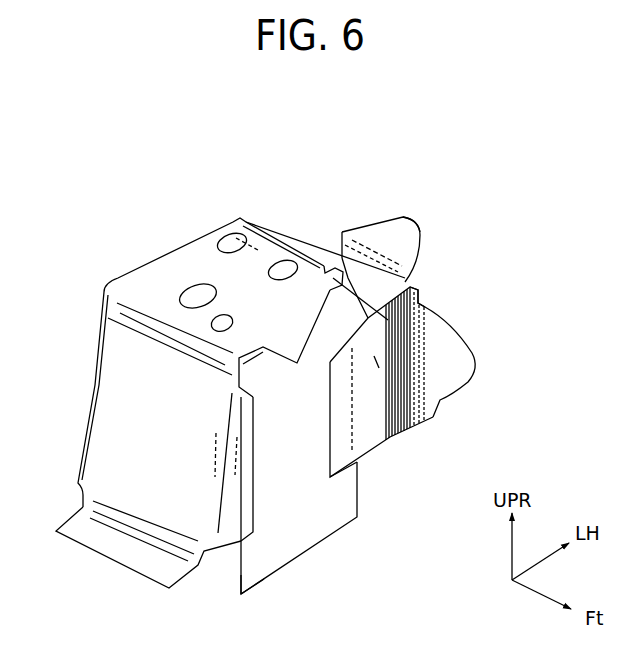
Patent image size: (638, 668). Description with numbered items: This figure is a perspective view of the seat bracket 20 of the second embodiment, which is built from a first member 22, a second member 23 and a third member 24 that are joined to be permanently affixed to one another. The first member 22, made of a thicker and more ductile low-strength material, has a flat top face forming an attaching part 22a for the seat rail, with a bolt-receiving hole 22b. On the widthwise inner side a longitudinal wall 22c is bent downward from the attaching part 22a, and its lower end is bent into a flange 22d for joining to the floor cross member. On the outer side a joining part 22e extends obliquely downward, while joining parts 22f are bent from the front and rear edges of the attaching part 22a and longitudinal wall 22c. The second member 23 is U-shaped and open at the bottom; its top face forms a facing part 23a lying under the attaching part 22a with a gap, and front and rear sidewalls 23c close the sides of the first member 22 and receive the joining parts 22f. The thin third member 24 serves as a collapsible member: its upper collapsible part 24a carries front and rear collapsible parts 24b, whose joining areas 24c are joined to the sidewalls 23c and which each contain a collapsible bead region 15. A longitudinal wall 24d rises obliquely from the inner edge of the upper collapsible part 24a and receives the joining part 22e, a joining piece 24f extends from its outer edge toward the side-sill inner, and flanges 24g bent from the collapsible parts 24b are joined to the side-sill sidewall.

The seat bracket 20 is at (281, 190).
The first member 22 is at (146, 242).
The attaching part 22a is at (132, 285).
The bolt-receiving hole 22b is at (194, 286).
The longitudinal wall 22c is at (105, 413).
The flange 22d is at (103, 542).
The joining part 22e is at (338, 266).
The joining parts 22f is at (297, 367).
The second member 23 is at (310, 562).
The facing part 23a is at (340, 253).
The front and rear sidewalls 23c is at (240, 563).
The third member 24 is at (428, 291).
The upper collapsible part 24a is at (386, 278).
The front and rear collapsible parts 24b is at (393, 440).
The joining areas 24c is at (344, 465).
The longitudinal wall 24d is at (413, 283).
The joining piece 24f is at (411, 218).
The flanges 24g is at (476, 356).
The bead region 15 is at (378, 360).